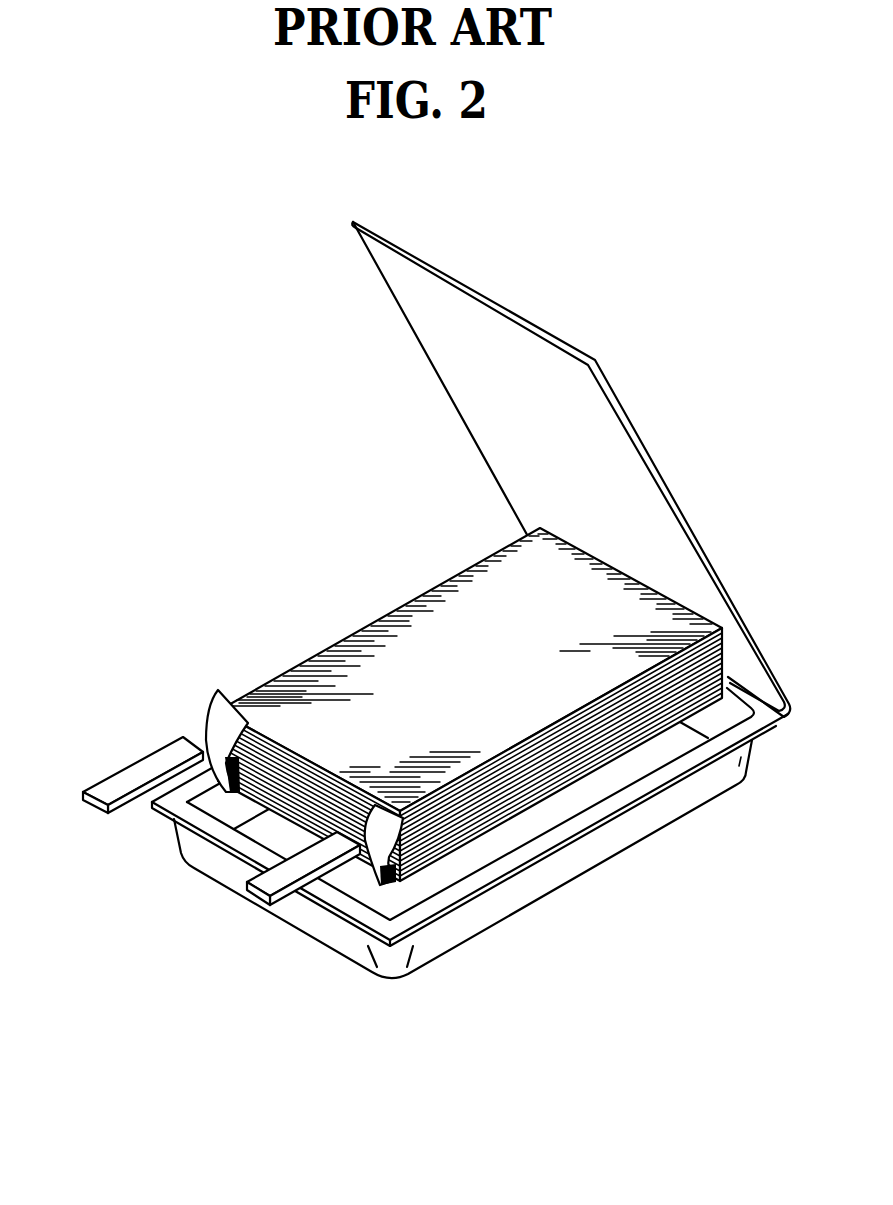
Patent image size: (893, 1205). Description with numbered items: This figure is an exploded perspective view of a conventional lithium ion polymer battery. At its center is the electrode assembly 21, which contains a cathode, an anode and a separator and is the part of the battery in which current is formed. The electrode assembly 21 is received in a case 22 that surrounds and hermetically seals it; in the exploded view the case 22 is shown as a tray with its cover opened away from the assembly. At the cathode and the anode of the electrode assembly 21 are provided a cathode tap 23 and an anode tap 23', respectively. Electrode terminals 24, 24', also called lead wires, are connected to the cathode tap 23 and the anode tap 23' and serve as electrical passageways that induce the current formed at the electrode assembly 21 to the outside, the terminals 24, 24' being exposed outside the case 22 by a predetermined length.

The electrode assembly 21 is at (288, 618).
The case 22 is at (566, 902).
The cathode tap 23 is at (174, 804).
The anode tap 23' is at (344, 925).
The electrode terminal 24 is at (143, 754).
The electrode terminal 24' is at (268, 901).